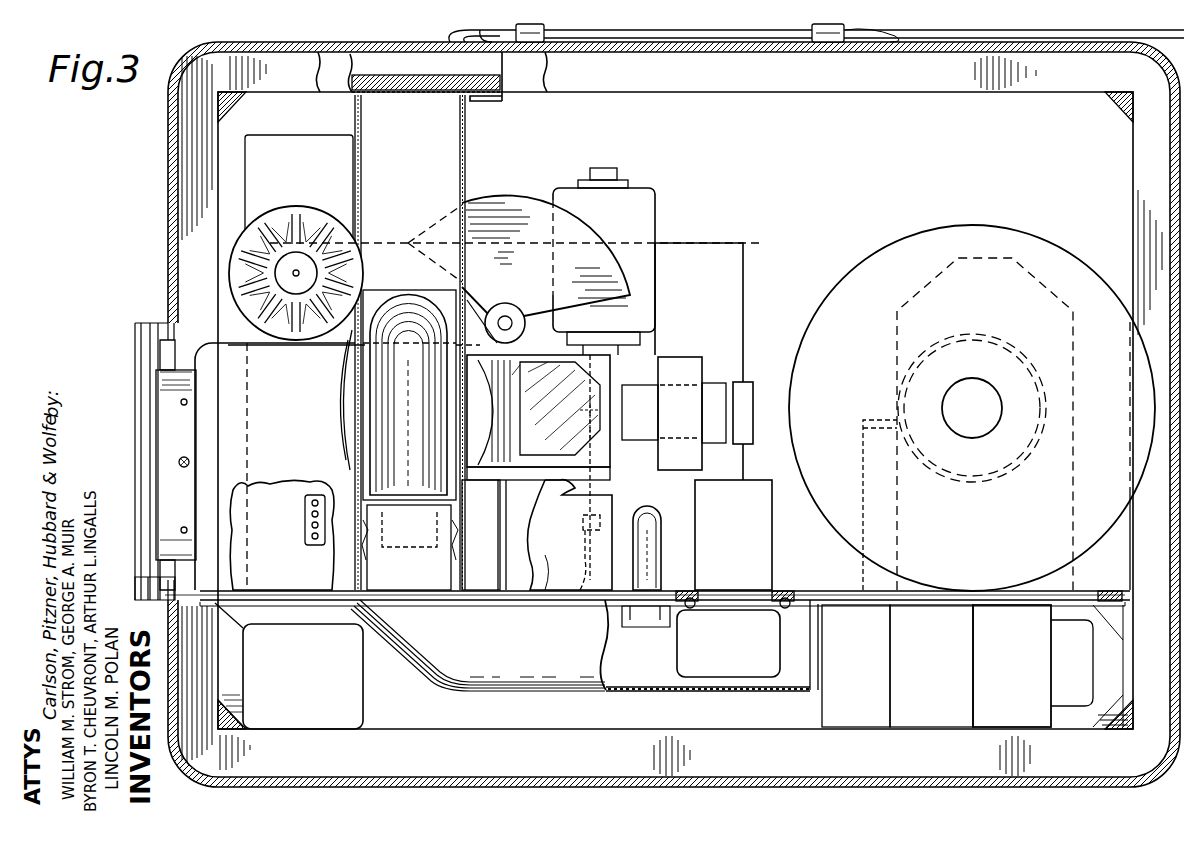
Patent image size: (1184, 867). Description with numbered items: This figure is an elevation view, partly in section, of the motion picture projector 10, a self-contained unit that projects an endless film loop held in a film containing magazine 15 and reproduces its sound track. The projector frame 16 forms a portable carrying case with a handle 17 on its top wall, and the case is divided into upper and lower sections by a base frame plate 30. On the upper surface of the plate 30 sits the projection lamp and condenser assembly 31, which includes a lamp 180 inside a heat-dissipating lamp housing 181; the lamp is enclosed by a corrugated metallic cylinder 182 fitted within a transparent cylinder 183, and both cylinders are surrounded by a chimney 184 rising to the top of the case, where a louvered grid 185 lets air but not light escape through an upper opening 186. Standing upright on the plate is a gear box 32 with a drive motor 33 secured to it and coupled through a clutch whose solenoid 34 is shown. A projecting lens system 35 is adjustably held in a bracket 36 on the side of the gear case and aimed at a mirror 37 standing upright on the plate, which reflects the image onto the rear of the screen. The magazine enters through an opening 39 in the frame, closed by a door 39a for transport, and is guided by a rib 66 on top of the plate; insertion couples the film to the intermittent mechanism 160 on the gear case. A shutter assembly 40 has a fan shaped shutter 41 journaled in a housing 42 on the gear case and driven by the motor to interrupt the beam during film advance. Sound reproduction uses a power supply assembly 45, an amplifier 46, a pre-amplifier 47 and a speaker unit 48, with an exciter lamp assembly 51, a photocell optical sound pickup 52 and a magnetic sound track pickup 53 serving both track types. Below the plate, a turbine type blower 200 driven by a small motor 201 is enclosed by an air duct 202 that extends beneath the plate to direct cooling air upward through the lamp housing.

The motion picture projector 10 is at (165, 244).
The film containing magazine 15 is at (192, 342).
The frame 16 is at (175, 202).
The handle 17 is at (905, 34).
The base frame plate 30 is at (812, 592).
The projection lamp and condenser assembly 31 is at (338, 448).
The gear box 32 is at (738, 258).
The drive motor 33 is at (292, 220).
The solenoid 34 is at (296, 135).
The projecting lens system 35 is at (745, 382).
The bracket 36 is at (680, 357).
The mirror 37 is at (1040, 278).
The opening 39 is at (152, 590).
The door 39a is at (140, 482).
The shutter assembly 40 is at (534, 188).
The fan shaped shutter 41 is at (608, 262).
The housing 42 is at (538, 304).
The power supply assembly 45 is at (1030, 676).
The amplifier 46 is at (312, 686).
The pre-amplifier 47 is at (480, 592).
The speaker unit 48 is at (895, 250).
The exciter lamp assembly 51 is at (562, 565).
The photocell optical sound pickup 52 is at (662, 534).
The magnetic sound track pickup 53 is at (600, 520).
The rib 66 is at (272, 590).
The intermittent mechanism 160 is at (663, 220).
The lamp 180 is at (376, 380).
The lamp housing 181 is at (346, 357).
The corrugated metallic cylinder 182 is at (384, 296).
The transparent cylinder 183 is at (362, 284).
The chimney 184 is at (466, 150).
The louvered grid 185 is at (412, 82).
The upper opening 186 is at (366, 42).
The turbine type blower 200 is at (725, 668).
The motor 201 is at (760, 552).
The air duct 202 is at (640, 692).